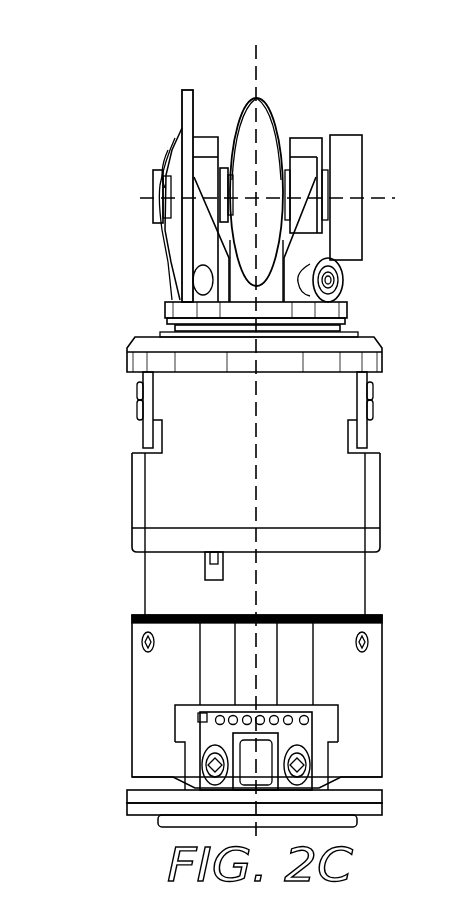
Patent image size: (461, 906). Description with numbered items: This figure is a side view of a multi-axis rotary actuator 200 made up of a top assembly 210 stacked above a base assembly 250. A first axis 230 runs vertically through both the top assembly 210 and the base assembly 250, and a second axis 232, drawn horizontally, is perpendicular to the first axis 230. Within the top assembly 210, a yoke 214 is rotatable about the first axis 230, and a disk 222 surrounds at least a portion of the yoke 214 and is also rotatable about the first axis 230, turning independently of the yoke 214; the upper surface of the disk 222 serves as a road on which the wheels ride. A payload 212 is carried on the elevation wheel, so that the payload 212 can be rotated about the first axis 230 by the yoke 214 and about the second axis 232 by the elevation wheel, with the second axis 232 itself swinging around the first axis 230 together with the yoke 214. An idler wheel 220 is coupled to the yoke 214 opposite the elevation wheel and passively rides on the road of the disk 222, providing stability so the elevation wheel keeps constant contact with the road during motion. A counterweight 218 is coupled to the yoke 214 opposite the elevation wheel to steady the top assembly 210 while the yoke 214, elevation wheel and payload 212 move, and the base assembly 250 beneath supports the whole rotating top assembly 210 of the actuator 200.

The multi-axis rotary actuator 200 is at (237, 446).
The top assembly 210 is at (241, 189).
The payload 212 is at (266, 103).
The yoke 214 is at (310, 135).
The counterweight 218 is at (363, 177).
The idler wheel 220 is at (338, 282).
The disk 222 is at (345, 310).
The first axis 230 is at (262, 72).
The second axis 232 is at (150, 200).
The base assembly 250 is at (108, 850).